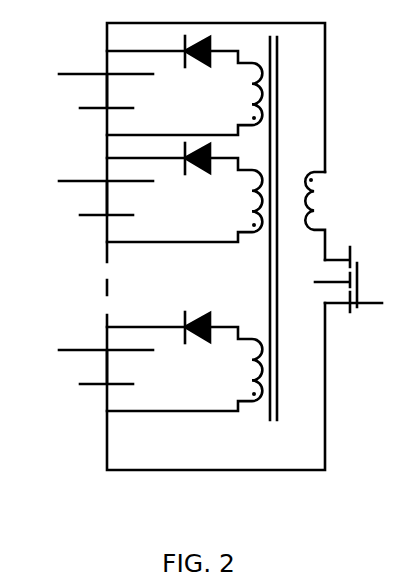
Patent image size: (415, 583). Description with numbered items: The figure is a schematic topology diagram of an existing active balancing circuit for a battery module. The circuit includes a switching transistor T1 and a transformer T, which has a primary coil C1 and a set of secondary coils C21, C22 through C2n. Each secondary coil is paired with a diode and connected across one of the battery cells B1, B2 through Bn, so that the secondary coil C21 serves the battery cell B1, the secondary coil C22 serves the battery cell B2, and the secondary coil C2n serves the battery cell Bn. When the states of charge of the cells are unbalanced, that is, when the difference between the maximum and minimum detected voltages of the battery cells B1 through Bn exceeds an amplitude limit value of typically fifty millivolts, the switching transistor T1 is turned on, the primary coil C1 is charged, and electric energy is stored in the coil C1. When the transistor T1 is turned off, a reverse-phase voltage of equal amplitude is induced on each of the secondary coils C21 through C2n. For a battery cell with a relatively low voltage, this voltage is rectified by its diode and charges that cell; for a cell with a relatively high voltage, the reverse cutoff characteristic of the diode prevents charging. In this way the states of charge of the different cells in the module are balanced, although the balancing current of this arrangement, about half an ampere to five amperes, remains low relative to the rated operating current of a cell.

The battery cell B1 is at (87, 93).
The battery cell B2 is at (87, 202).
The battery cell Bn is at (87, 367).
The secondary coil C21 is at (184, 85).
The secondary coil C22 is at (184, 192).
The secondary coil C2n is at (184, 361).
The primary coil C1 is at (338, 216).
The transformer T is at (273, 249).
The switching transistor T1 is at (348, 301).